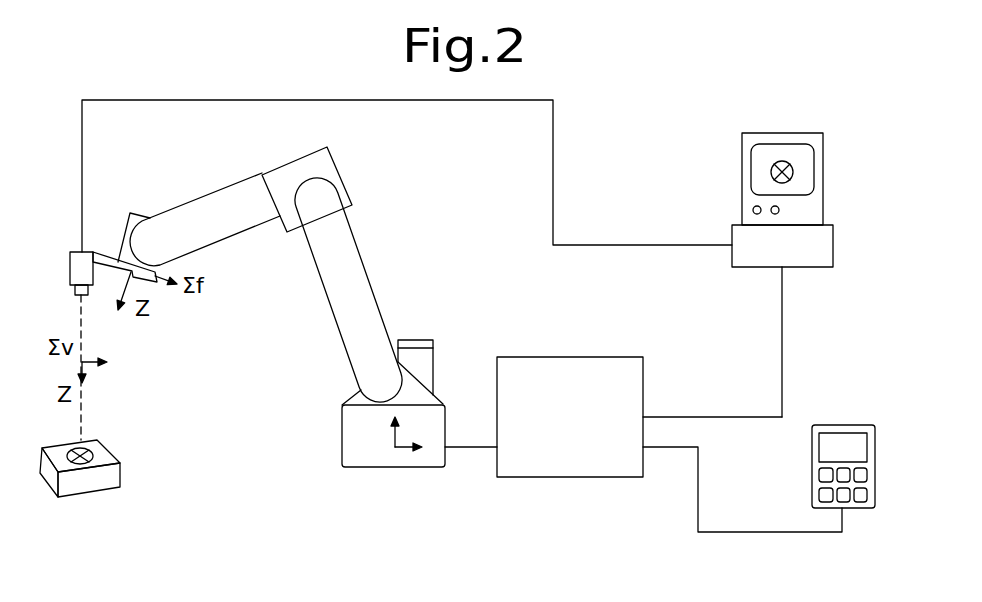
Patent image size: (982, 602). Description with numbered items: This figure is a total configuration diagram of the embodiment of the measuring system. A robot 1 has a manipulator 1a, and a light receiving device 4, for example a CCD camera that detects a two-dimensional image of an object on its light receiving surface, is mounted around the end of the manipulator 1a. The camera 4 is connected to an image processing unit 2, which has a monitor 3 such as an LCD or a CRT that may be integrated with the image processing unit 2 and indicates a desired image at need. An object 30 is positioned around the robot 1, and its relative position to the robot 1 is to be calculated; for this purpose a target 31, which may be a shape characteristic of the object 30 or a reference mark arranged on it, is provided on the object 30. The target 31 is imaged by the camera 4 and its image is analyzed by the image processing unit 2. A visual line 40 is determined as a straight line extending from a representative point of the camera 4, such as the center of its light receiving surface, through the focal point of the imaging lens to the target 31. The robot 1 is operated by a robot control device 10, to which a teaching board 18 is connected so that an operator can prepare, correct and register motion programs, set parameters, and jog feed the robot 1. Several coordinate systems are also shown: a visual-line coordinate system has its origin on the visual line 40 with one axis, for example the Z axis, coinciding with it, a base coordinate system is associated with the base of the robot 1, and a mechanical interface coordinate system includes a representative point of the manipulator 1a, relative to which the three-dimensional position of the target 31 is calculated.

The robot 1 is at (363, 494).
The manipulator 1a is at (382, 268).
The image processing unit 2 is at (833, 238).
The monitor 3 is at (823, 152).
The light receiving device 4 is at (70, 262).
The robot control device 10 is at (603, 477).
The teaching board 18 is at (876, 453).
The object 30 is at (129, 482).
The target 31 is at (95, 455).
The visual line 40 is at (83, 408).